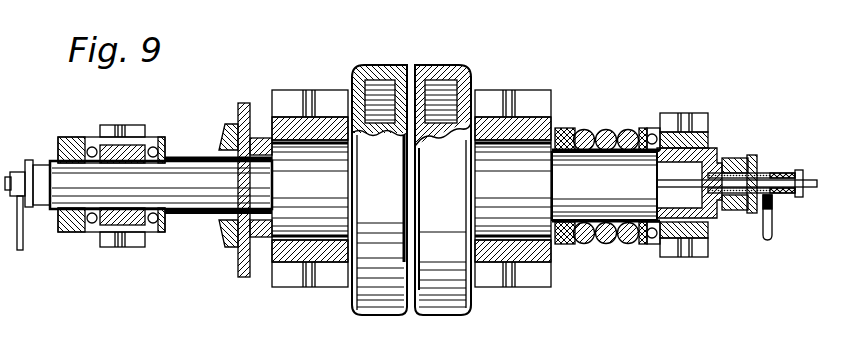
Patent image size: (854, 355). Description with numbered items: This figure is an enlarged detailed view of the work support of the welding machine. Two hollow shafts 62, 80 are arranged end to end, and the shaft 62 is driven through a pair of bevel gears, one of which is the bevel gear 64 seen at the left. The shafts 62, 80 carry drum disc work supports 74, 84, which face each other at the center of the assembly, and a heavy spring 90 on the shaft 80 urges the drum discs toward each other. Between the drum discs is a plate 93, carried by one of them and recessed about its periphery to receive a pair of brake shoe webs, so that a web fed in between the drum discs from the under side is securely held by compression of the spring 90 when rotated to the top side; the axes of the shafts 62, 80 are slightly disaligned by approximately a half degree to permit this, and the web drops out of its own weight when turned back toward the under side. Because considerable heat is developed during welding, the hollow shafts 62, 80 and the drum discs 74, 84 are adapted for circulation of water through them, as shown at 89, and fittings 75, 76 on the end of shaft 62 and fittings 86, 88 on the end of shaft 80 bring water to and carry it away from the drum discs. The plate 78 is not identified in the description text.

The shaft 62 is at (198, 208).
The bevel gear 64 is at (226, 246).
The drum disc work support 74 is at (356, 294).
The fitting 75 is at (23, 234).
The fitting 76 is at (1, 183).
The plate 78 is at (240, 268).
The shaft 80 is at (610, 204).
The drum disc work support 84 is at (447, 66).
The fitting 86 is at (813, 178).
The fitting 88 is at (772, 228).
The water circulation passage 89 is at (449, 106).
The heavy spring 90 is at (607, 131).
The plate 93 is at (413, 231).